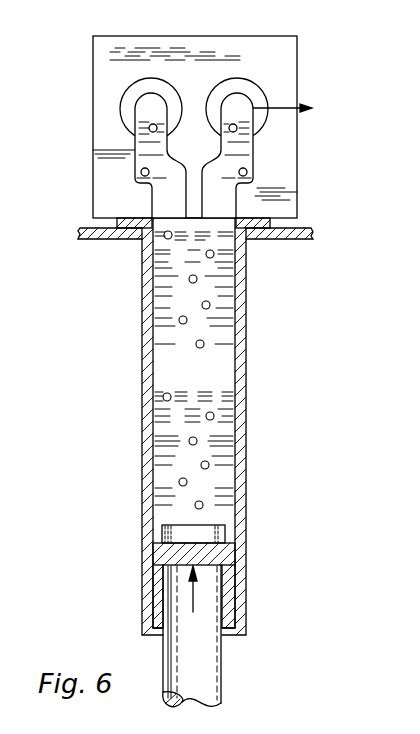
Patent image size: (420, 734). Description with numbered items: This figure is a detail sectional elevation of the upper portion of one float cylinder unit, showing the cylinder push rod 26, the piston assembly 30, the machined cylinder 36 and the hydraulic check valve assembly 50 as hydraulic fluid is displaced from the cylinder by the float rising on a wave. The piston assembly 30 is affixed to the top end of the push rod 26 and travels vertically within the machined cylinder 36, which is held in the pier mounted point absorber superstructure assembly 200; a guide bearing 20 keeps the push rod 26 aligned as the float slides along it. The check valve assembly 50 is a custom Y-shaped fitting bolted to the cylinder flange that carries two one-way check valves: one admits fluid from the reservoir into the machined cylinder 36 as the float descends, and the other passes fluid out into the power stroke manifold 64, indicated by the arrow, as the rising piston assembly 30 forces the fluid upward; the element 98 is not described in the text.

The guide bearing 20 is at (163, 728).
The cylinder push rod 26 is at (203, 664).
The piston assembly 30 is at (203, 553).
The machined cylinder 36 is at (246, 392).
The hydraulic check valve assembly 50 is at (200, 50).
The power stroke manifold 64 is at (233, 99).
The tube wall 98 is at (246, 291).
The pier mounted point absorber superstructure assembly 200 is at (273, 239).